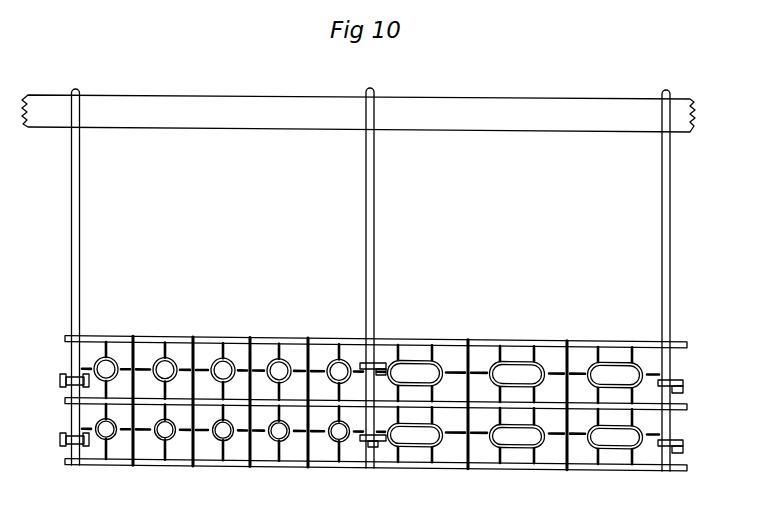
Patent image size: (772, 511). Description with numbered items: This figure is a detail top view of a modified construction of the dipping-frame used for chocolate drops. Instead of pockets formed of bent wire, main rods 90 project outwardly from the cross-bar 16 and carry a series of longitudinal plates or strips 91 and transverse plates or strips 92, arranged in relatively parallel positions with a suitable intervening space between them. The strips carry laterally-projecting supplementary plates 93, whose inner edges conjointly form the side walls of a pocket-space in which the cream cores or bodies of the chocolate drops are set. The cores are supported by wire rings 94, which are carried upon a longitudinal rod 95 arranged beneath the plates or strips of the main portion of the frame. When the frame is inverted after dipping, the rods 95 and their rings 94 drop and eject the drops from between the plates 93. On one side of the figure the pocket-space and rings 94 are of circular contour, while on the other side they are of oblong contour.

The cross-bar 16 is at (275, 122).
The main rods 90 is at (80, 240).
The longitudinal plates or strips 91 is at (218, 337).
The transverse plates or strips 92 is at (307, 453).
The supplementary plates 93 is at (162, 344).
The wire rings 94 is at (99, 346).
The longitudinal rod 95 is at (152, 381).